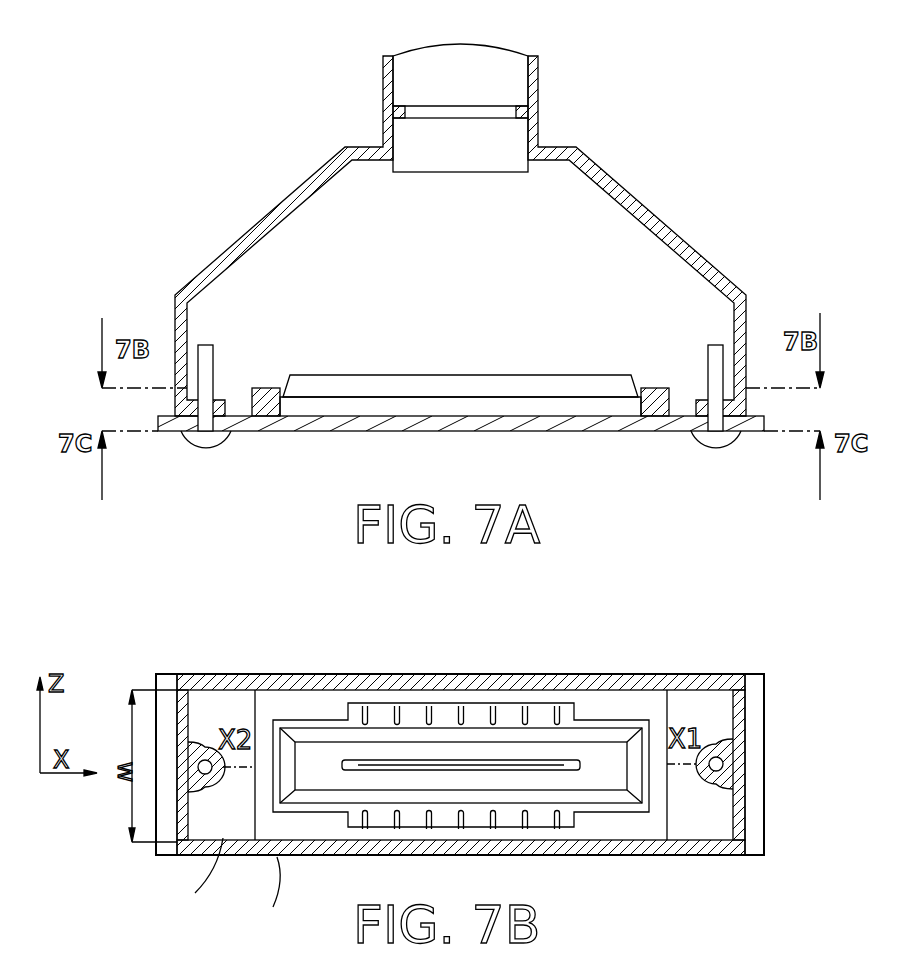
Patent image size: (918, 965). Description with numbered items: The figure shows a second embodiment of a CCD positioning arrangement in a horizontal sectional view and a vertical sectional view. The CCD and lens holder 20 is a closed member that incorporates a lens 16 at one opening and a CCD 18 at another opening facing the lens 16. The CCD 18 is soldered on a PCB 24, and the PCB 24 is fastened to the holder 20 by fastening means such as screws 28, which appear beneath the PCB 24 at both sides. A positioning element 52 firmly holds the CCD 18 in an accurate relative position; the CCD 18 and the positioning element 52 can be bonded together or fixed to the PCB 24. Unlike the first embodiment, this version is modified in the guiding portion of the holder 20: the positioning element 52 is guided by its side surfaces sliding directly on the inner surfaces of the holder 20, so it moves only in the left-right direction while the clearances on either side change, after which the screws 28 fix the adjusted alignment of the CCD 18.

In FIG. 7A, the lens 16 is at (490, 58).
In FIG. 7A, the CCD and lens holder 20 is at (618, 185).
In FIG. 7A, the PCB 24 is at (347, 433).
In FIG. 7B, the PCB 24 is at (753, 834).
In FIG. 7A, the CCD 18 is at (440, 402).
In FIG. 7B, the CCD 18 is at (467, 780).
In FIG. 7A, the positioning element 52 is at (645, 405).
In FIG. 7B, the positioning element 52 is at (635, 820).
In FIG. 7A, the screws 28 is at (720, 451).